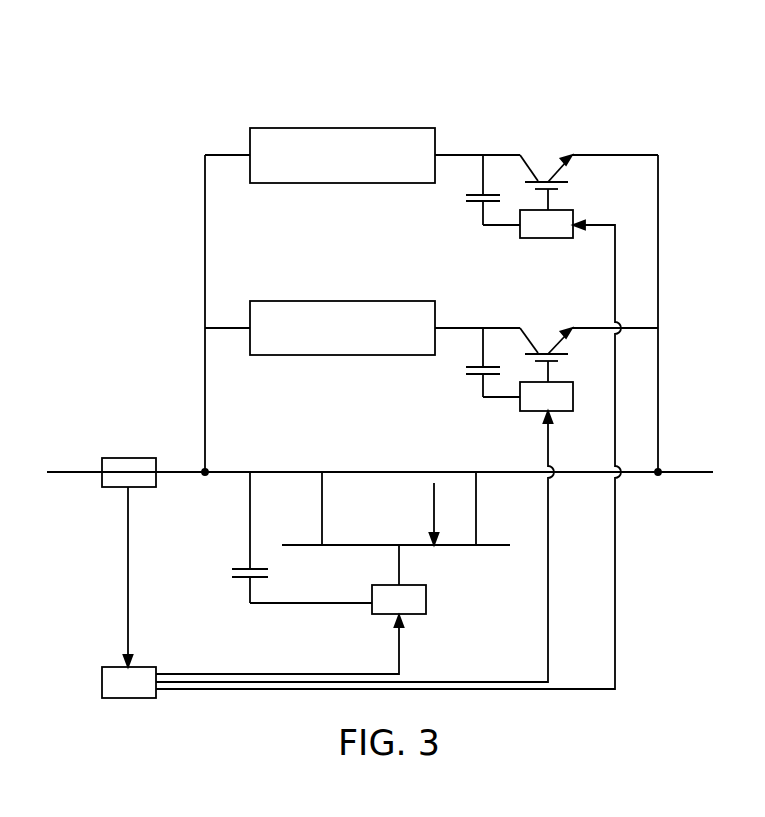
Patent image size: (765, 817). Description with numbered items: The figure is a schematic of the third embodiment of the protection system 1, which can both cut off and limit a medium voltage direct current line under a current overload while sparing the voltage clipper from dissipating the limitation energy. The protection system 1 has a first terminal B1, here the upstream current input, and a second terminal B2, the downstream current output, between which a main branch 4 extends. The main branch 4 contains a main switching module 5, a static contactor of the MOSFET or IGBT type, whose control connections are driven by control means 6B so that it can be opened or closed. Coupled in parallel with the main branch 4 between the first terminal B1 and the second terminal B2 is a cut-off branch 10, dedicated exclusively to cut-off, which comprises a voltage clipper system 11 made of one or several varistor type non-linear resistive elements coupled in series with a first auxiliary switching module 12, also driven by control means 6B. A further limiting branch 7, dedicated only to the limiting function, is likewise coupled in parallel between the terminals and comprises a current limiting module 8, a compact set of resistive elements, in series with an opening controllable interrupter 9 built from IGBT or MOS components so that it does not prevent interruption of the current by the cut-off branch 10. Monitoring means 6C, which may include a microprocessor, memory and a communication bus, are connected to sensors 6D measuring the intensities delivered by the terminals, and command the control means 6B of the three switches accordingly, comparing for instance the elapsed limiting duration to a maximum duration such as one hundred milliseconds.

The protection system 1 is at (185, 56).
The main branch 4 is at (490, 477).
The main switching module 5 is at (462, 548).
The control means 6B is at (578, 238).
The monitoring means 6C is at (100, 680).
The sensors 6D is at (128, 455).
The limiting branch 7 is at (225, 328).
The current limiting module 8 is at (341, 301).
The opening controllable interrupter 9 is at (537, 336).
The cut-off branch 10 is at (225, 155).
The voltage clipper system 11 is at (341, 128).
The first auxiliary switching module 12 is at (533, 166).
The first terminal B1 is at (205, 480).
The second terminal B2 is at (658, 478).